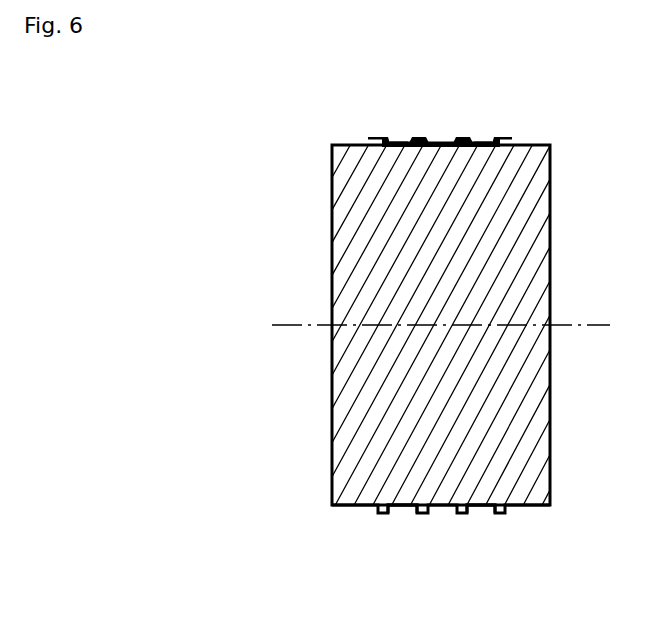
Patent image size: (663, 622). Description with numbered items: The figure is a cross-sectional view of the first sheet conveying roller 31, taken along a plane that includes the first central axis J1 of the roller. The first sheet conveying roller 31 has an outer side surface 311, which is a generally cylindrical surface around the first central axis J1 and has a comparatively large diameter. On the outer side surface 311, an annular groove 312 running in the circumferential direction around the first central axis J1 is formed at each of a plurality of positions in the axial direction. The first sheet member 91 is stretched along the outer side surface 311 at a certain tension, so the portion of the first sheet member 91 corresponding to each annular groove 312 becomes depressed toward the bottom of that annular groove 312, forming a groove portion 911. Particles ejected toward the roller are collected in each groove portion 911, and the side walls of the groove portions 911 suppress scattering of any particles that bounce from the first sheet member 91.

The first sheet conveying roller 31 is at (316, 116).
The outer side surface 311 is at (358, 506).
The annular groove 312 is at (402, 509).
The first sheet member 91 is at (378, 136).
The groove portion 911 is at (401, 140).
The first central axis J1 is at (292, 318).